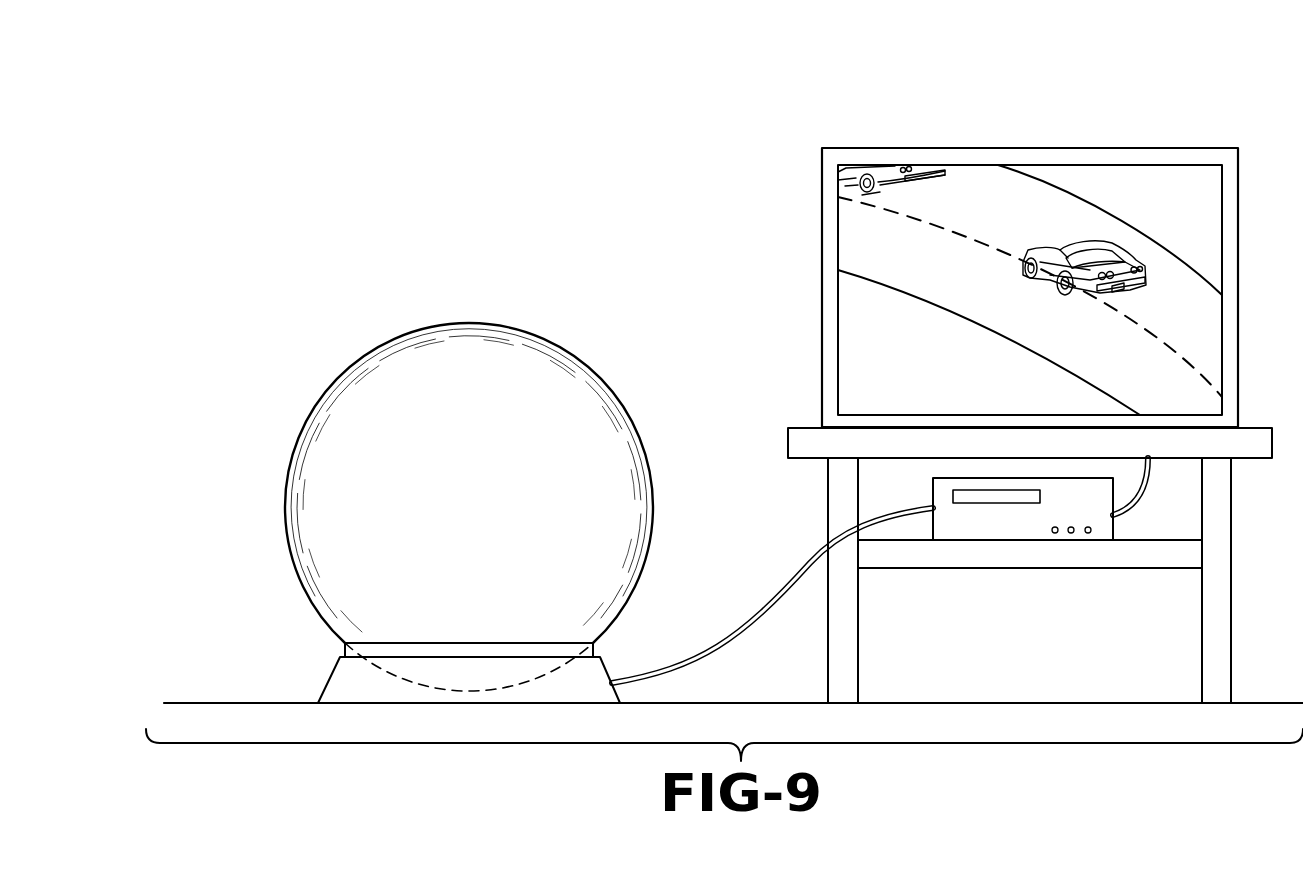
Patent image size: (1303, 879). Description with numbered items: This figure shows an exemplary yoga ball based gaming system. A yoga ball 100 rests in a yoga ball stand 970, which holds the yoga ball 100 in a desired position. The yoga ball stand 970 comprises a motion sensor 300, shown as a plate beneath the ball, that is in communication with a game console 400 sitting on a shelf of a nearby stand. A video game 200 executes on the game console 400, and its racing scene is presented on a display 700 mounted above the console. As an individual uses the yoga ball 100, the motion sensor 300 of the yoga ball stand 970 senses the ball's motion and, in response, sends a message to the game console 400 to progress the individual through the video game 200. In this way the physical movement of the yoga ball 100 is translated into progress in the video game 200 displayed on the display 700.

The yoga ball 100 is at (395, 388).
The video game 200 is at (1108, 182).
The motion sensor 300 is at (415, 648).
The game console 400 is at (1007, 523).
The television display 700 is at (899, 150).
The yoga ball stand 970 is at (330, 678).